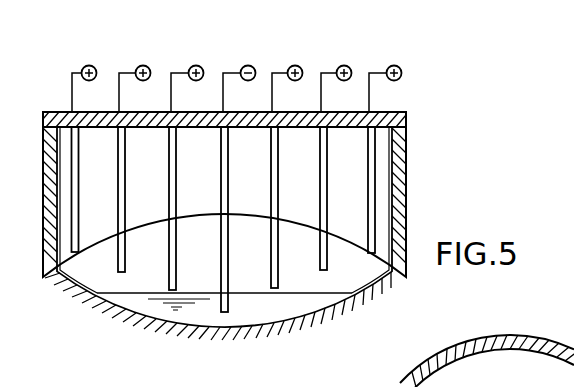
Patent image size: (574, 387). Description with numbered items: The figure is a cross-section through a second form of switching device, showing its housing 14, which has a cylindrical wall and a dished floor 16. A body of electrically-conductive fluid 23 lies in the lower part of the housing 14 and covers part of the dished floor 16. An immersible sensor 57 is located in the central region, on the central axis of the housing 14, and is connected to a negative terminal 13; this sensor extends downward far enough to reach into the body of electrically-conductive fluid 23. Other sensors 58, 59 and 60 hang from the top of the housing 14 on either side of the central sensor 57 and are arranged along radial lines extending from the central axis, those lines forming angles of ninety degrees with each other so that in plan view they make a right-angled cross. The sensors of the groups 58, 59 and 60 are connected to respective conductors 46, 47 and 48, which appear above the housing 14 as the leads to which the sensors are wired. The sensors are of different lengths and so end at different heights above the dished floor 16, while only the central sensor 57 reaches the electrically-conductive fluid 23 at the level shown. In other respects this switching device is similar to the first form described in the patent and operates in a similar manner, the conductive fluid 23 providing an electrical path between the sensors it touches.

The negative terminal 13 is at (224, 72).
The housing 14 is at (417, 213).
The dished floor 16 is at (343, 307).
The electrically-conductive fluid 23 is at (279, 307).
The conductor 46 is at (178, 72).
The conductor 47 is at (126, 72).
The conductor 48 is at (75, 72).
The immersible sensor 57 is at (278, 160).
The sensor 58 is at (176, 177).
The sensor 59 is at (125, 200).
The sensor 60 is at (79, 228).